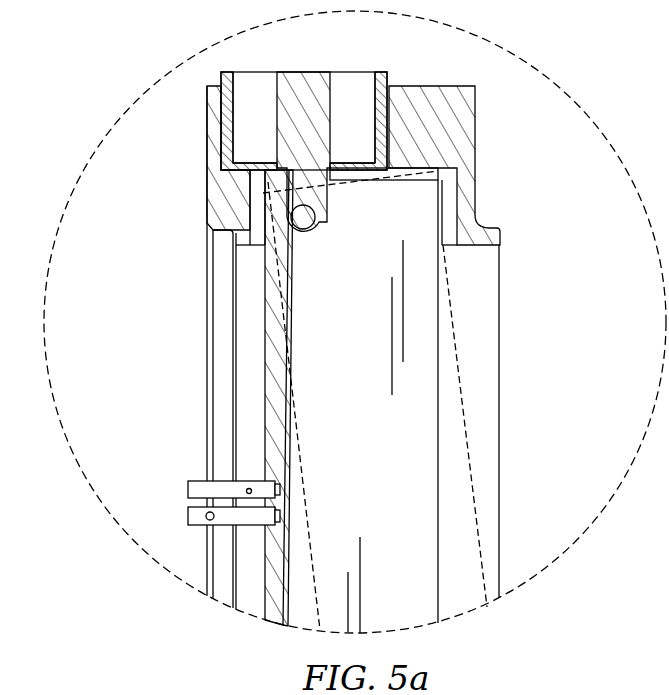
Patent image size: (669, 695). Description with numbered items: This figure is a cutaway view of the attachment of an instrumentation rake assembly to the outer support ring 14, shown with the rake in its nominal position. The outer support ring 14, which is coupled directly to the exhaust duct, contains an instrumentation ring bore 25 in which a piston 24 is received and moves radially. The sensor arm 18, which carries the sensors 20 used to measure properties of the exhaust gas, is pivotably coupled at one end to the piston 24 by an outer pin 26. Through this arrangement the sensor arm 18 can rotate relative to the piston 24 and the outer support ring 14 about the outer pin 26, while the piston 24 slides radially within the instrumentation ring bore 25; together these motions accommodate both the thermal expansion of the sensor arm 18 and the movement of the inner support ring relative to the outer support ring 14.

The outer support ring 14 is at (479, 98).
The sensor arm 18 is at (400, 430).
The sensors 20 is at (176, 496).
The piston 24 is at (315, 120).
The instrumentation ring bore 25 is at (401, 104).
The outer pin 26 is at (333, 223).